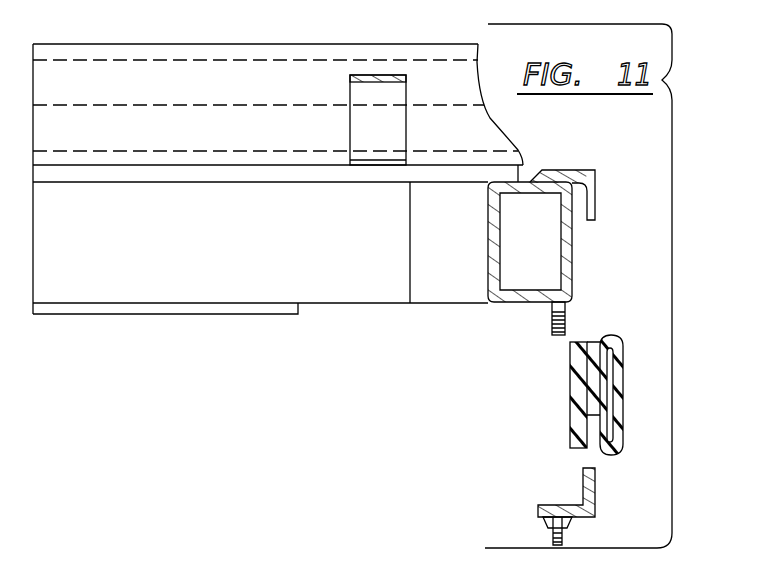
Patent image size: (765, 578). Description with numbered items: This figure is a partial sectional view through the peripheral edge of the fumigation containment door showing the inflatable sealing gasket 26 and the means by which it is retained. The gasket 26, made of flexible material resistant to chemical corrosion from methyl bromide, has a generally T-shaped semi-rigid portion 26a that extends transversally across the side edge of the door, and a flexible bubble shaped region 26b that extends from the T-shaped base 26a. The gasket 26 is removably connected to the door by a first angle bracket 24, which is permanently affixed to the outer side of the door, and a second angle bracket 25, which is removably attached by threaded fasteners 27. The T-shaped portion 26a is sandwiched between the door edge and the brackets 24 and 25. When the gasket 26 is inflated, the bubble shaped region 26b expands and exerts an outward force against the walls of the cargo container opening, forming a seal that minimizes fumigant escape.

The first angle bracket 24 is at (580, 167).
The second angle bracket 25 is at (595, 504).
The inflatable sealing gasket 26 is at (587, 395).
The T-shaped semi-rigid portion 26a is at (570, 408).
The flexible bubble shaped region 26b is at (620, 400).
The threaded fasteners 27 is at (566, 325).